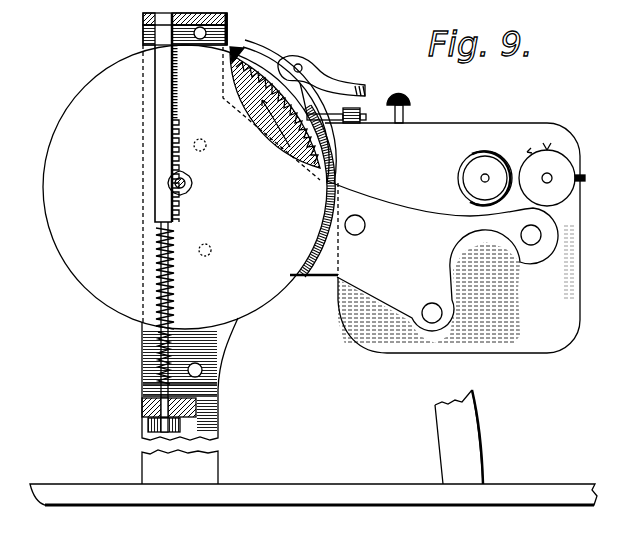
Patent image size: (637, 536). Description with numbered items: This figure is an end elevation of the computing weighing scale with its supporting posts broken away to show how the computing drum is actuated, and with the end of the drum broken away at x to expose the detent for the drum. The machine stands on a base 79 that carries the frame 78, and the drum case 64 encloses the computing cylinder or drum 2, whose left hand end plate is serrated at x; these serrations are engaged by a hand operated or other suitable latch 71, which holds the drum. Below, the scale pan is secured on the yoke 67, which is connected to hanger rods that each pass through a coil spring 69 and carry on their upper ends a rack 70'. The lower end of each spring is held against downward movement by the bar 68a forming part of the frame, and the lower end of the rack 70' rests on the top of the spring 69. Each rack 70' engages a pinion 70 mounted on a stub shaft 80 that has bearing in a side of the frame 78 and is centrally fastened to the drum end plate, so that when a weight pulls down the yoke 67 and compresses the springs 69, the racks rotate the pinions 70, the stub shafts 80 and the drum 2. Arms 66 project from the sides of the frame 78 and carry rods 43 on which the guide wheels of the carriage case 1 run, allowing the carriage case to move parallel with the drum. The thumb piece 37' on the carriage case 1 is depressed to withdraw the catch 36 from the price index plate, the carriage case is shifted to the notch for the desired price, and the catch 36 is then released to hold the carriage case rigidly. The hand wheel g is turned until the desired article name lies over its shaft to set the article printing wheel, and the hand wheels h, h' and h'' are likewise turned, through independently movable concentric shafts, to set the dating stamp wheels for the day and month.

The carriage case 1 is at (581, 243).
The computing drum 2 is at (270, 140).
The serrated end plate x is at (254, 64).
The catch 36 is at (359, 111).
The thumb piece 37' is at (411, 105).
The rod 43 is at (363, 233).
The drum case 64 is at (189, 187).
The arm 66 is at (442, 256).
The yoke 67 is at (142, 410).
The bar 68a is at (218, 388).
The coil spring 69 is at (177, 282).
The pinion 70 is at (197, 117).
The rack 70' is at (142, 133).
The latch 71 is at (332, 82).
The frame 78 is at (228, 20).
The base 79 is at (327, 490).
The stub shaft 80 is at (193, 183).
The hand wheel g is at (577, 162).
The hand wheel h is at (478, 172).
The hand wheel h' is at (448, 169).
The hand wheel h'' is at (457, 191).